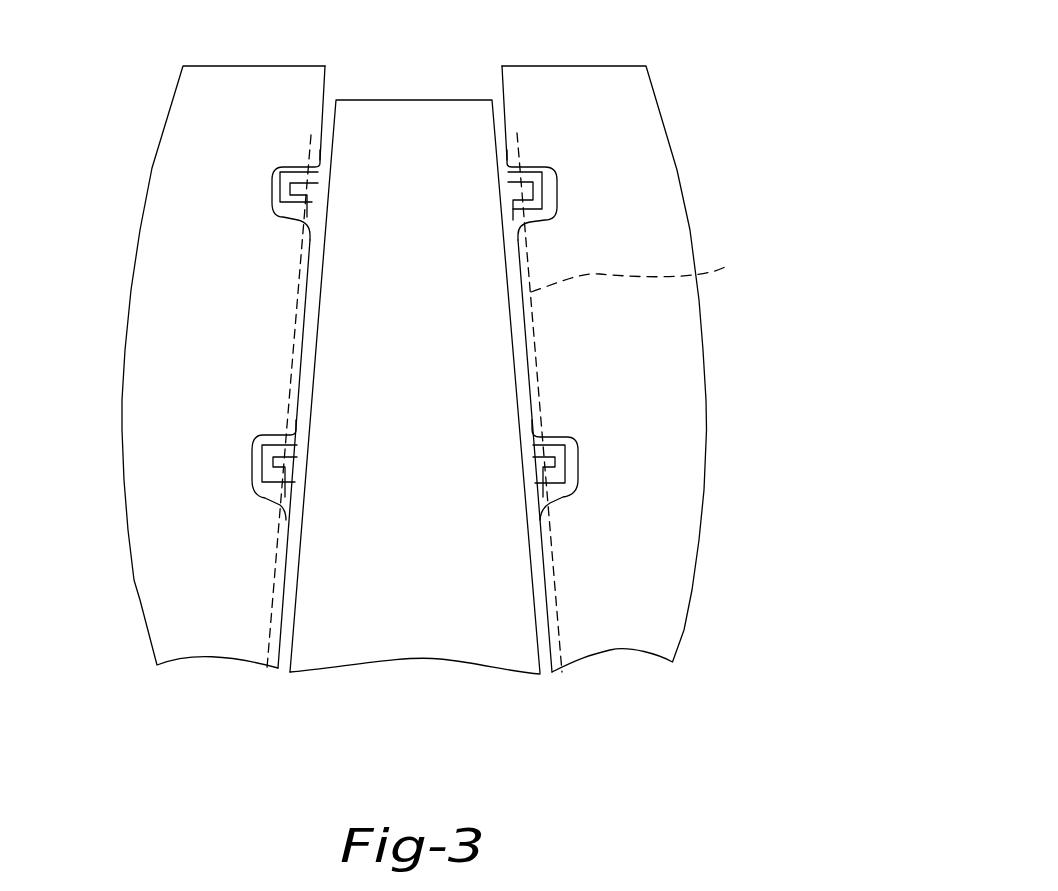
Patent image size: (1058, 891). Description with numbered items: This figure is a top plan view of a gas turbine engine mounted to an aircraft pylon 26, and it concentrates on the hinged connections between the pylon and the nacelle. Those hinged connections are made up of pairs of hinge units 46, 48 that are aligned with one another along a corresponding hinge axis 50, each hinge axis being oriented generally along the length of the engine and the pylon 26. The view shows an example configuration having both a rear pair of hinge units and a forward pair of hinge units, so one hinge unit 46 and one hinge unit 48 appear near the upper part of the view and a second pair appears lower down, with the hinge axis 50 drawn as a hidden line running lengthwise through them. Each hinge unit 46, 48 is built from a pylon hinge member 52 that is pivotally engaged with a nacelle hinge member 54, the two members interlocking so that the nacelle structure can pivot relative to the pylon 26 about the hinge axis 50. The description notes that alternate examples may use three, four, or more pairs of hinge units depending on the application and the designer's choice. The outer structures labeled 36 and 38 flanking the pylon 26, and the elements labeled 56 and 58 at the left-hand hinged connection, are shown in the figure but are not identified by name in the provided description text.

The pylon 26 is at (416, 402).
The left side panel 36 is at (142, 309).
The right side panel 38 is at (677, 318).
The hinge unit 46 is at (552, 169).
The hinge unit 48 is at (558, 448).
The hinge axis 50 is at (647, 265).
The pylon hinge member 52 is at (515, 193).
The nacelle hinge member 54 is at (515, 171).
The upper left joint 56 is at (296, 195).
The lower left joint 58 is at (274, 470).